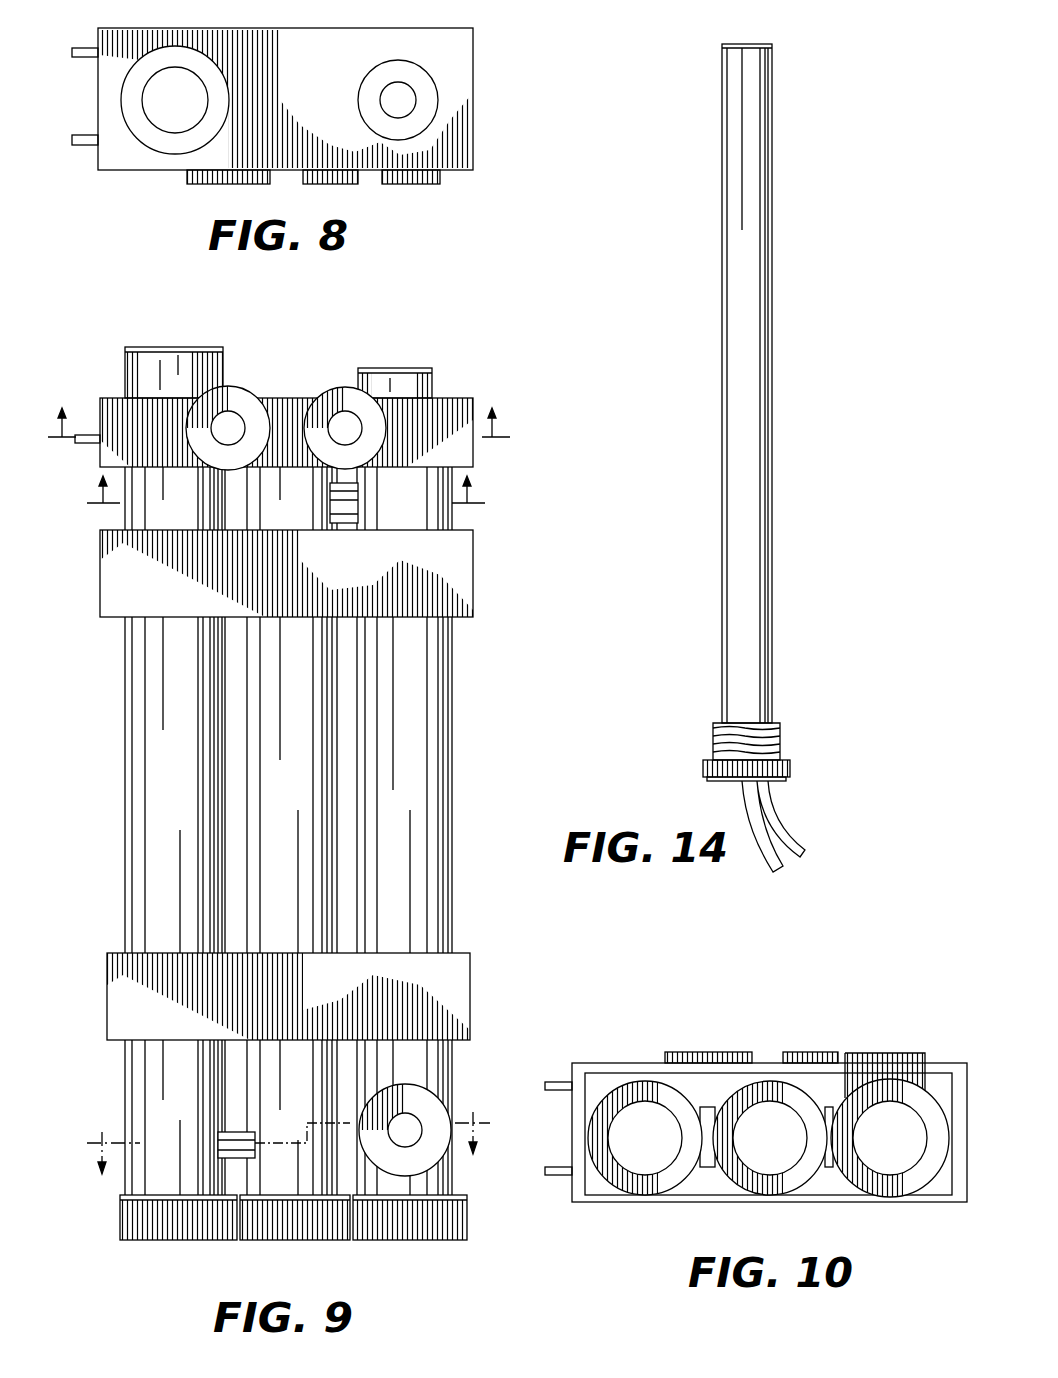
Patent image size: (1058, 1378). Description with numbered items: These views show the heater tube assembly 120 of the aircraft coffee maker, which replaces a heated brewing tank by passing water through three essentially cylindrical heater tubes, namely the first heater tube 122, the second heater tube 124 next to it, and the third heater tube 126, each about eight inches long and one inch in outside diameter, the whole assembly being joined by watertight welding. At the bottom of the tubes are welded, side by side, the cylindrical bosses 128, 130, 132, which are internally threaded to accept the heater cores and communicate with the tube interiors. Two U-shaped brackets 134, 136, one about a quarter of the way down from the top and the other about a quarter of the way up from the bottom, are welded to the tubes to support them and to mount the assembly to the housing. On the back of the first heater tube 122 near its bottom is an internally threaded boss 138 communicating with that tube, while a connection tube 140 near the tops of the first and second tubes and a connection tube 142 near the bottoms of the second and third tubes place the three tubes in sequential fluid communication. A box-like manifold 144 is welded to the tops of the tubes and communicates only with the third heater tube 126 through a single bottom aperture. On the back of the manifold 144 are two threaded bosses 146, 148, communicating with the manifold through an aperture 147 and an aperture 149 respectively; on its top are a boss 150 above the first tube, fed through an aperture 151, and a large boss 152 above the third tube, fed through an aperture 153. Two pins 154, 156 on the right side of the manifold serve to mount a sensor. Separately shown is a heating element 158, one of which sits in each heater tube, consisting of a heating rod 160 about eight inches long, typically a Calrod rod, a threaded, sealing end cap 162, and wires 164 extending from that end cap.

In FIG. 8, the heater tube assembly 120 is at (289, 124).
In FIG. 9, the heater tube assembly 120 is at (285, 805).
In FIG. 10, the heater tube assembly 120 is at (747, 1137).
In FIG. 9, the first heater tube 122 is at (445, 652).
In FIG. 9, the second heater tube 124 is at (286, 643).
In FIG. 9, the third heater tube 126 is at (145, 668).
In FIG. 9, the cylindrical boss 128 is at (403, 1228).
In FIG. 10, the cylindrical boss 128 is at (882, 1185).
In FIG. 9, the cylindrical boss 130 is at (288, 1228).
In FIG. 10, the cylindrical boss 130 is at (762, 1183).
In FIG. 9, the cylindrical boss 132 is at (173, 1228).
In FIG. 10, the cylindrical boss 132 is at (640, 1183).
In FIG. 9, the bracket 134 is at (470, 566).
In FIG. 9, the bracket 136 is at (464, 982).
In FIG. 10, the bracket 136 is at (605, 1069).
In FIG. 8, the boss 138 is at (404, 180).
In FIG. 9, the boss 138 is at (405, 1094).
In FIG. 10, the boss 138 is at (895, 1060).
In FIG. 9, the connection tube 140 is at (358, 503).
In FIG. 10, the connection tube 140 is at (824, 1180).
In FIG. 9, the connection tube 142 is at (255, 1143).
In FIG. 10, the connection tube 142 is at (706, 1182).
In FIG. 8, the manifold 144 is at (474, 135).
In FIG. 9, the manifold 144 is at (474, 418).
In FIG. 10, the manifold 144 is at (938, 1188).
In FIG. 8, the boss 146 is at (340, 180).
In FIG. 9, the boss 146 is at (320, 394).
In FIG. 10, the boss 146 is at (812, 1052).
In FIG. 9, the aperture 147 is at (337, 408).
In FIG. 8, the boss 148 is at (222, 178).
In FIG. 9, the boss 148 is at (238, 399).
In FIG. 10, the boss 148 is at (725, 1052).
In FIG. 9, the aperture 149 is at (238, 436).
In FIG. 8, the boss 150 is at (411, 68).
In FIG. 9, the boss 150 is at (432, 370).
In FIG. 8, the aperture 151 is at (386, 94).
In FIG. 8, the large boss 152 is at (168, 144).
In FIG. 9, the large boss 152 is at (200, 347).
In FIG. 8, the aperture 153 is at (178, 72).
In FIG. 8, the pin 154 is at (82, 58).
In FIG. 10, the pin 154 is at (558, 1178).
In FIG. 8, the pin 156 is at (82, 146).
In FIG. 9, the pin 156 is at (88, 435).
In FIG. 10, the pin 156 is at (556, 1092).
In FIG. 14, the heating element 158 is at (729, 458).
In FIG. 14, the heating rod 160 is at (772, 442).
In FIG. 14, the threaded, sealing end cap 162 is at (788, 768).
In FIG. 14, the wires 164 is at (786, 840).